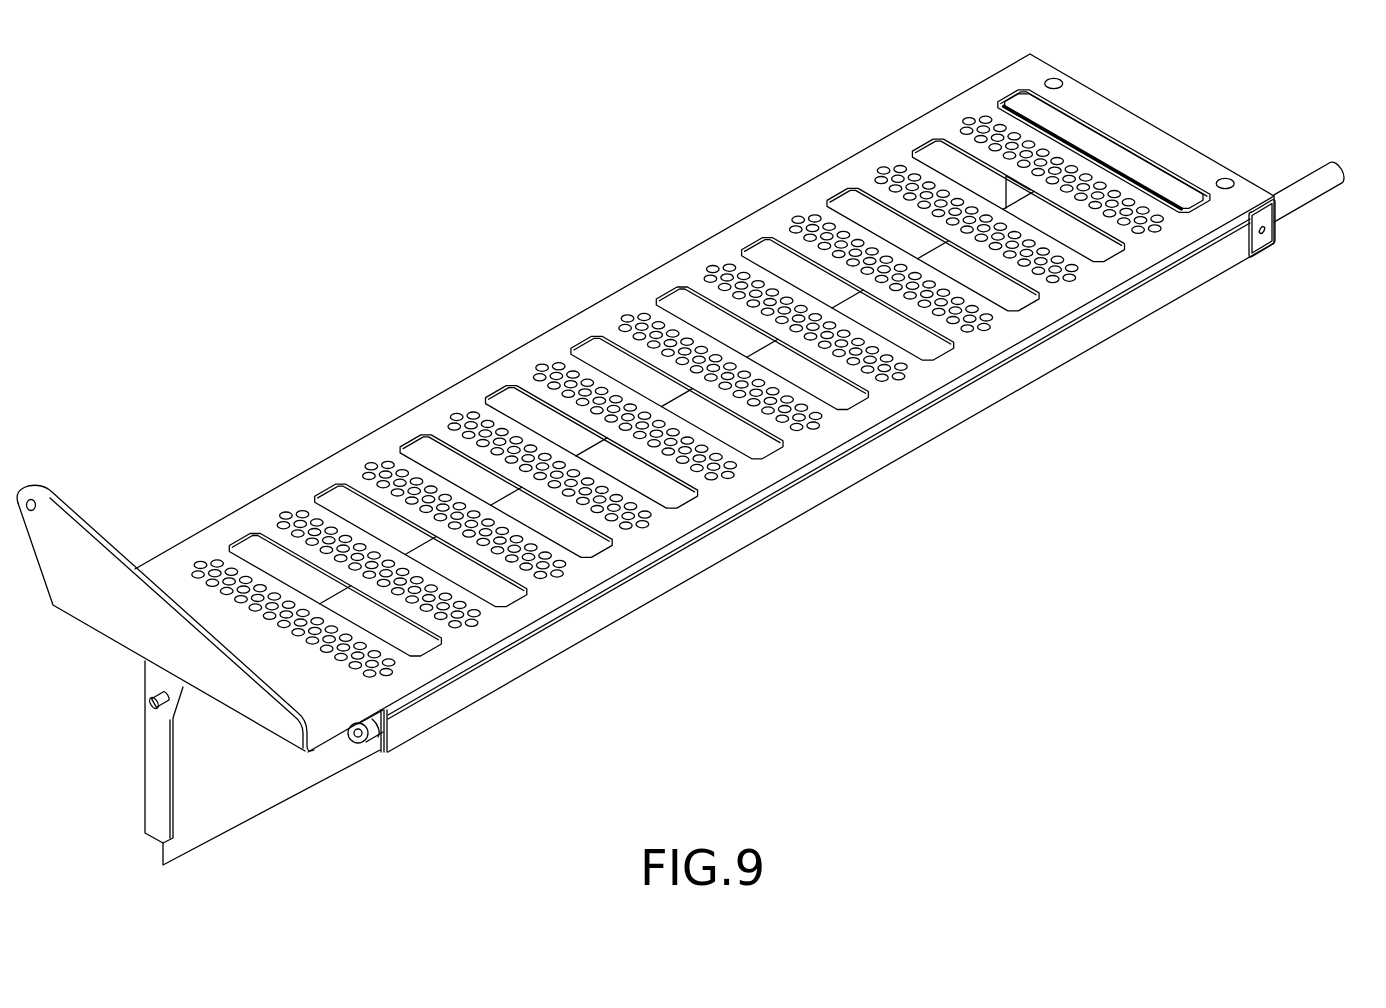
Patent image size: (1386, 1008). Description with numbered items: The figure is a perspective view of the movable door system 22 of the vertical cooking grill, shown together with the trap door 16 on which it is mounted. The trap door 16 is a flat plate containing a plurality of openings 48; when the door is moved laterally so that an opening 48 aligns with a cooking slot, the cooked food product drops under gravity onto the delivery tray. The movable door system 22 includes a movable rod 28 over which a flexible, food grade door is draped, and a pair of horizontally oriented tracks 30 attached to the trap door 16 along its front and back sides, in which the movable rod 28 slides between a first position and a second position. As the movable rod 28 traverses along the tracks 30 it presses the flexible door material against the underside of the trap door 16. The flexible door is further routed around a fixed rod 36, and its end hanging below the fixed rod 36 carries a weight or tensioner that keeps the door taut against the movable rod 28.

The trap door 16 is at (520, 367).
The movable door system 22 is at (303, 806).
The movable rod 28 is at (1300, 196).
The tracks 30 is at (1030, 112).
The fixed rod 36 is at (153, 702).
The opening 48 is at (412, 436).